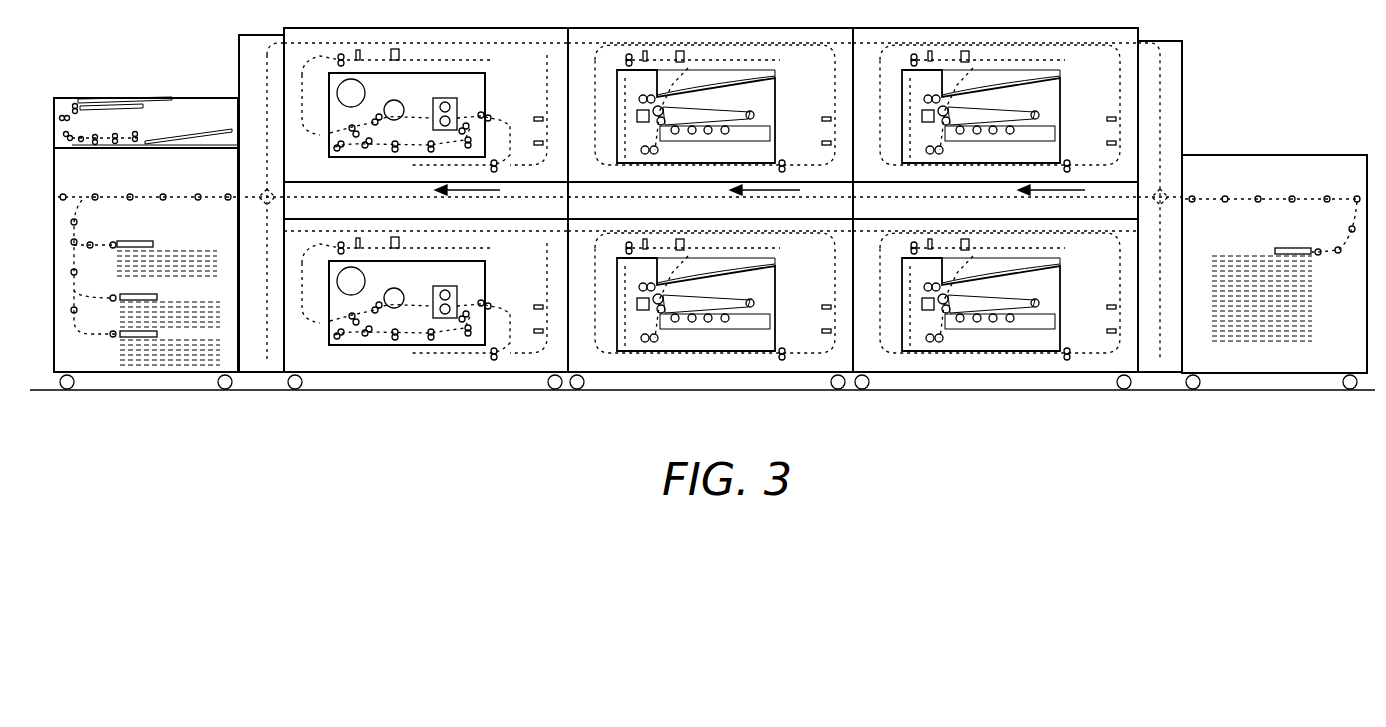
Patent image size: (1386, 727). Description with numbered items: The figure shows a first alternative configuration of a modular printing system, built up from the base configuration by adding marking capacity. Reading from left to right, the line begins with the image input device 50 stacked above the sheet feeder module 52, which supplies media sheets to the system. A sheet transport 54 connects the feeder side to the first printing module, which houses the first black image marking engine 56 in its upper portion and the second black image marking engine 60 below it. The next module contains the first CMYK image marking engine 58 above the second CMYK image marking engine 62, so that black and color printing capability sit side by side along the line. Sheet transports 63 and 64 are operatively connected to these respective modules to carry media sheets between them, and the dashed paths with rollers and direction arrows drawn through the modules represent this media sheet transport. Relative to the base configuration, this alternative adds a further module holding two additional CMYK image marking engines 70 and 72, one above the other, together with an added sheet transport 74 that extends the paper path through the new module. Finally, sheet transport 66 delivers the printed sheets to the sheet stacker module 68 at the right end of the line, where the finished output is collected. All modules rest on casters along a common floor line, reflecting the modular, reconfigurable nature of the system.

The image input device 50 is at (55, 122).
The sheet feeder module 52 is at (55, 288).
The sheet transport 54 is at (240, 58).
The first black image marking engine 56 is at (426, 212).
The first CMYK image marking engine 58 is at (710, 212).
The second black image marking engine 60 is at (405, 28).
The second CMYK image marking engine 62 is at (660, 28).
The sheet transport 63 is at (288, 205).
The sheet transport 64 is at (795, 212).
The sheet transport 66 is at (1182, 62).
The sheet stacker module 68 is at (1275, 155).
The additional CMYK image marking engine 70 is at (995, 212).
The additional CMYK image marking engine 72 is at (995, 28).
The sheet transport 74 is at (1127, 211).